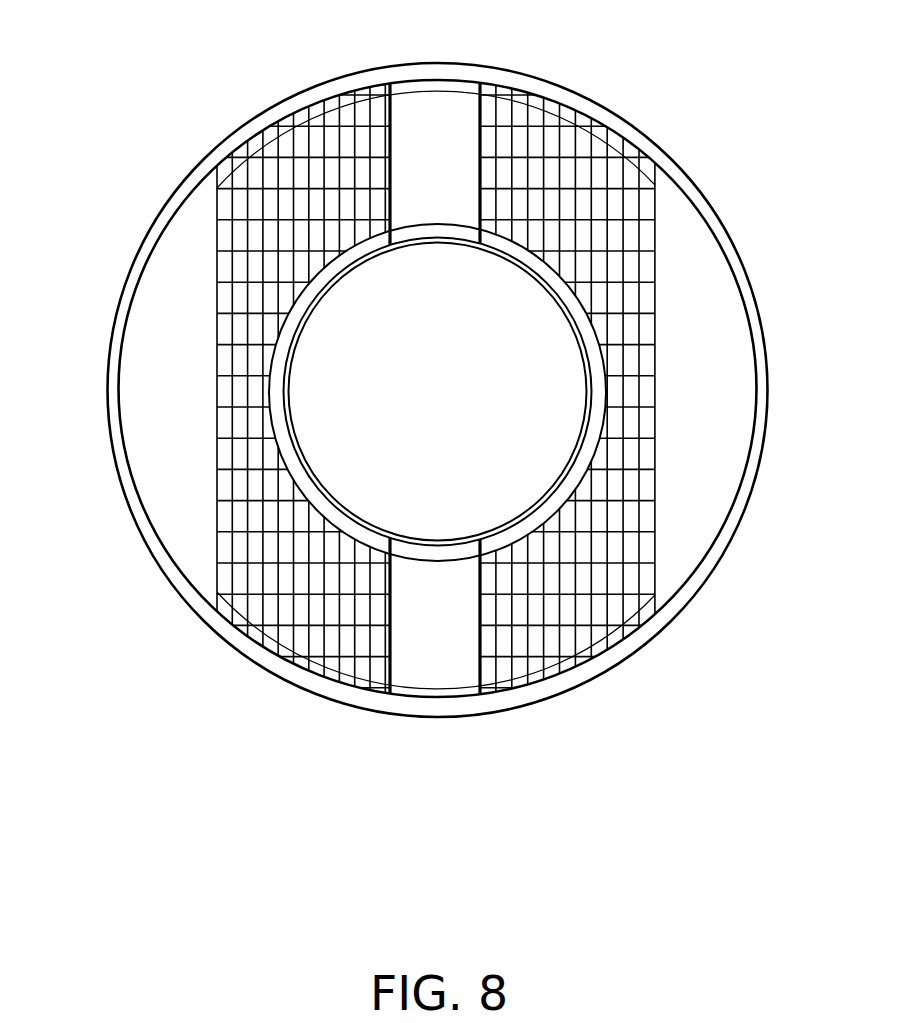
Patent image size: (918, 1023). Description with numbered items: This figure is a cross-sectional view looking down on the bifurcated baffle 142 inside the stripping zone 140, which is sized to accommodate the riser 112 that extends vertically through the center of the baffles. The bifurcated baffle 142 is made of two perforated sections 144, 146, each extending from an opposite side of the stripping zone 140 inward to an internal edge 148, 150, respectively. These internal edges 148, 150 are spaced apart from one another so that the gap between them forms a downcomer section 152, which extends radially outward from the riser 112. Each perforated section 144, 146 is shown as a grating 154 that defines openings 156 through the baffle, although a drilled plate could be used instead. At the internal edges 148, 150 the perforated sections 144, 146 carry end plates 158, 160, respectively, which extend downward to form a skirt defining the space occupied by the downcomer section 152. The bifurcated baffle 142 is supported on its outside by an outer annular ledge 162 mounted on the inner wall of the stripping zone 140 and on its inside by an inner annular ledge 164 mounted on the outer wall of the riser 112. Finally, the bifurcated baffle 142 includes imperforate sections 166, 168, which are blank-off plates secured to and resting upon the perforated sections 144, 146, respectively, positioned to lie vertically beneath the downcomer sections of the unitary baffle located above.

The riser 112 is at (413, 406).
The stripping zone 140 is at (757, 455).
The bifurcated baffle 142 is at (772, 562).
The perforated section 144 is at (656, 325).
The perforated section 146 is at (270, 563).
The internal edge 148 is at (480, 160).
The internal edge 150 is at (388, 167).
The downcomer section 152 is at (438, 633).
The grating 154 is at (580, 555).
The openings 156 is at (538, 642).
The end plate 158 is at (390, 628).
The end plate 160 is at (480, 628).
The outer annular ledge 162 is at (437, 84).
The inner annular ledge 164 is at (518, 245).
The imperforate section 166 is at (727, 343).
The imperforate section 168 is at (153, 332).